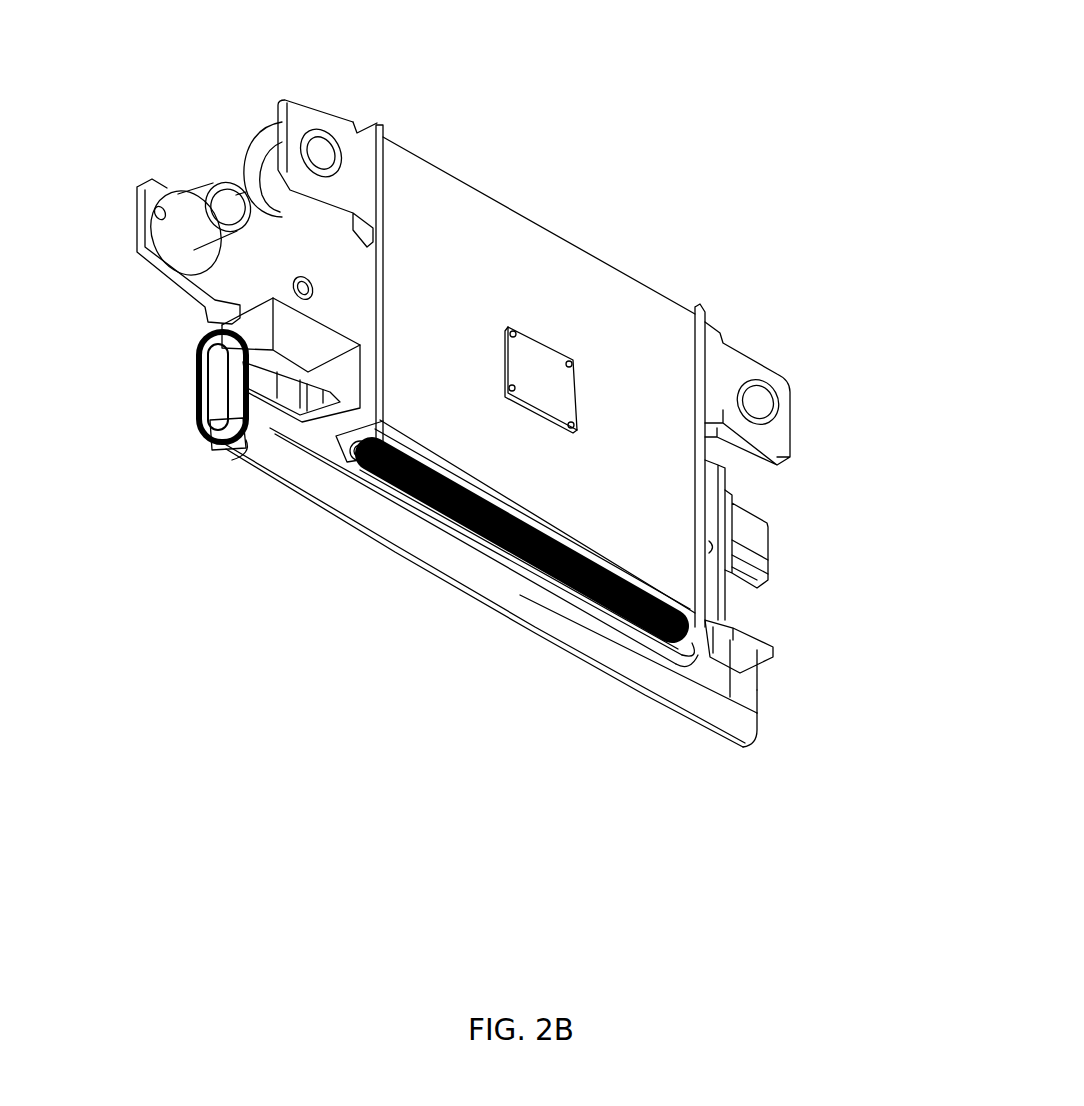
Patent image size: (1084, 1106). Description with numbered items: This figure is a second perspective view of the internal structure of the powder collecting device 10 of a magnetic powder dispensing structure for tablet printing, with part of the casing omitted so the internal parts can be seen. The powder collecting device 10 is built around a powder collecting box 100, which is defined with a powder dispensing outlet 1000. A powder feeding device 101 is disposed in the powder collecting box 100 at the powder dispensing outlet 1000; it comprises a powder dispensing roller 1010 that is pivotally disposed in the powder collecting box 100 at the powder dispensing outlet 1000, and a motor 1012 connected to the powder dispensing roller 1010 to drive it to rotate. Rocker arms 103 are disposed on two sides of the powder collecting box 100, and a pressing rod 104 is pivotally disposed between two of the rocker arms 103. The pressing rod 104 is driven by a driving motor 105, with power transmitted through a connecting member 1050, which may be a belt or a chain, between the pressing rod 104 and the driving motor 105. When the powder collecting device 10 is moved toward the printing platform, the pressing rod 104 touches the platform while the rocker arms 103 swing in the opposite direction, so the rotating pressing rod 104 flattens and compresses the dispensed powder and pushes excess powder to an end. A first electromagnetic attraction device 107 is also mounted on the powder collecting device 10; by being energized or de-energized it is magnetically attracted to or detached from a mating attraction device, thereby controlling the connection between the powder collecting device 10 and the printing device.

The powder collecting device 10 is at (680, 104).
The powder collecting box 100 is at (413, 173).
The powder feeding device 101 is at (843, 782).
The rocker arms 103 is at (223, 447).
The pressing rod 104 is at (325, 490).
The driving motor 105 is at (277, 392).
The first electromagnetic attraction device 107 is at (538, 360).
The powder dispensing outlet 1000 is at (633, 710).
The powder dispensing roller 1010 is at (633, 710).
The motor 1012 is at (760, 621).
The connecting member 1050 is at (200, 387).